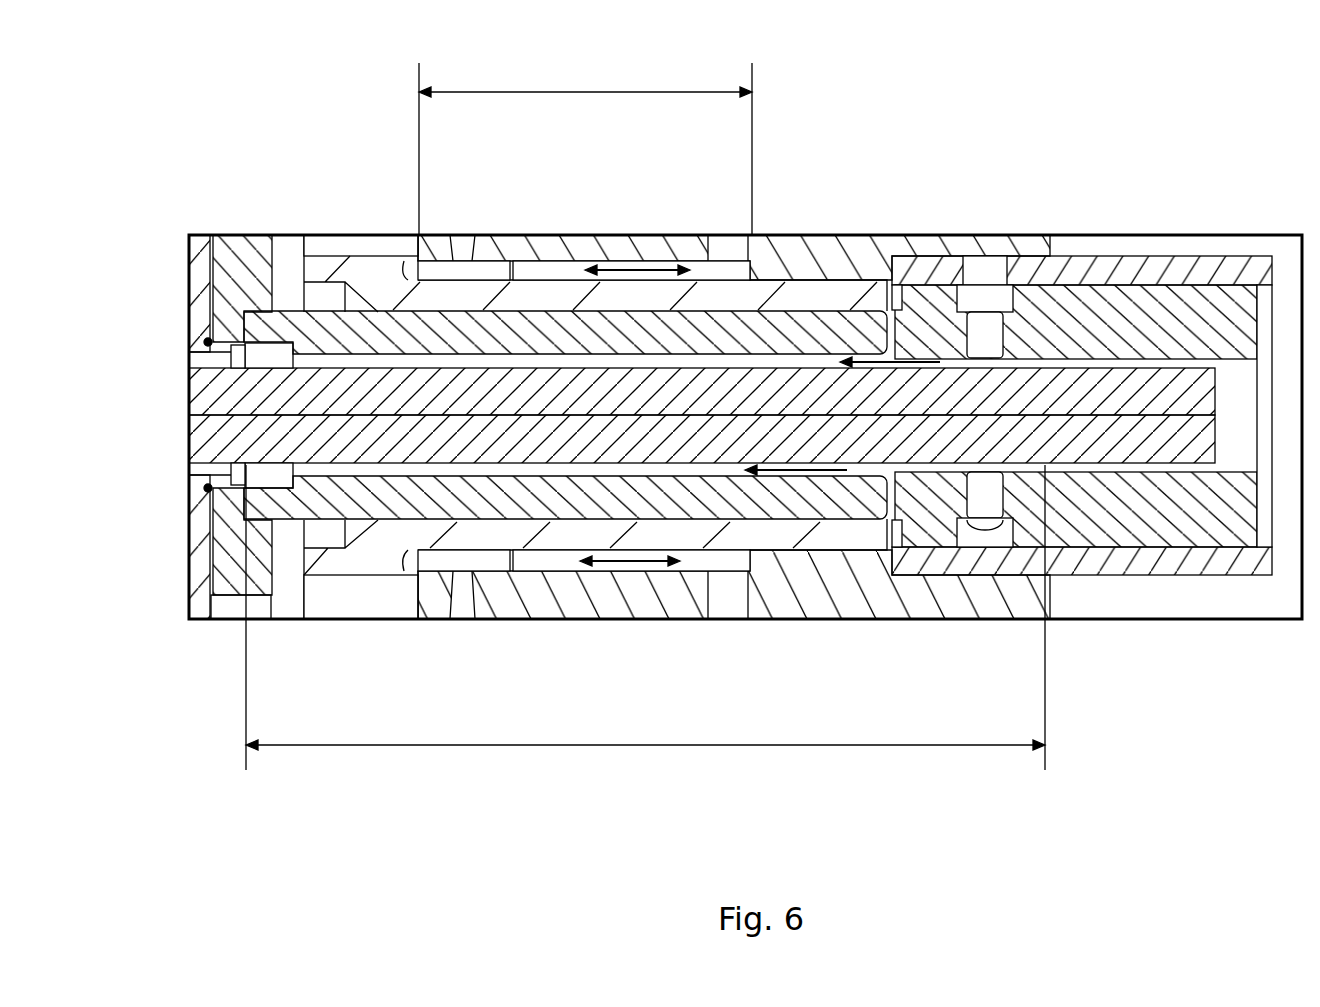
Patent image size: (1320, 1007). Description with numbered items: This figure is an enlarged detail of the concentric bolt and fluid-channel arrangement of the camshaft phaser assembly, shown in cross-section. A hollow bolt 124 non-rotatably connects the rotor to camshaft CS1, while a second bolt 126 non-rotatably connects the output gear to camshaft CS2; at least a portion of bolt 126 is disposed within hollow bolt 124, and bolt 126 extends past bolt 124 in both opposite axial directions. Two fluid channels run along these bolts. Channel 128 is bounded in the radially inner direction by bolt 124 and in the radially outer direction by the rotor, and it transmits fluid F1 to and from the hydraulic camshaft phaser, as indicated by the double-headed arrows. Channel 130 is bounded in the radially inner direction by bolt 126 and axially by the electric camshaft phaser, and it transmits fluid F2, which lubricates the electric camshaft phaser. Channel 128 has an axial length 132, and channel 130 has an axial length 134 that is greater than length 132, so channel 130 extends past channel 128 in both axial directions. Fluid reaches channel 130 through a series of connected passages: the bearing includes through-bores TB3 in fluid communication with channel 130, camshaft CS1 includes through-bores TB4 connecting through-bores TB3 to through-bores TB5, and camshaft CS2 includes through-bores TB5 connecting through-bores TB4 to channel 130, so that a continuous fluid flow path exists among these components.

The hollow bolt 124 is at (362, 262).
The bolt 126 is at (200, 400).
The channel 128 is at (545, 268).
The channel 130 is at (882, 473).
The length 132 is at (598, 92).
The length 134 is at (605, 745).
The fluid F1 is at (638, 262).
The fluid F2 is at (876, 362).
The through-bores TB3 is at (963, 250).
The through-bores TB4 is at (986, 272).
The through-bores TB5 is at (1003, 330).
The camshaft CS1 is at (1191, 226).
The camshaft CS2 is at (1185, 553).